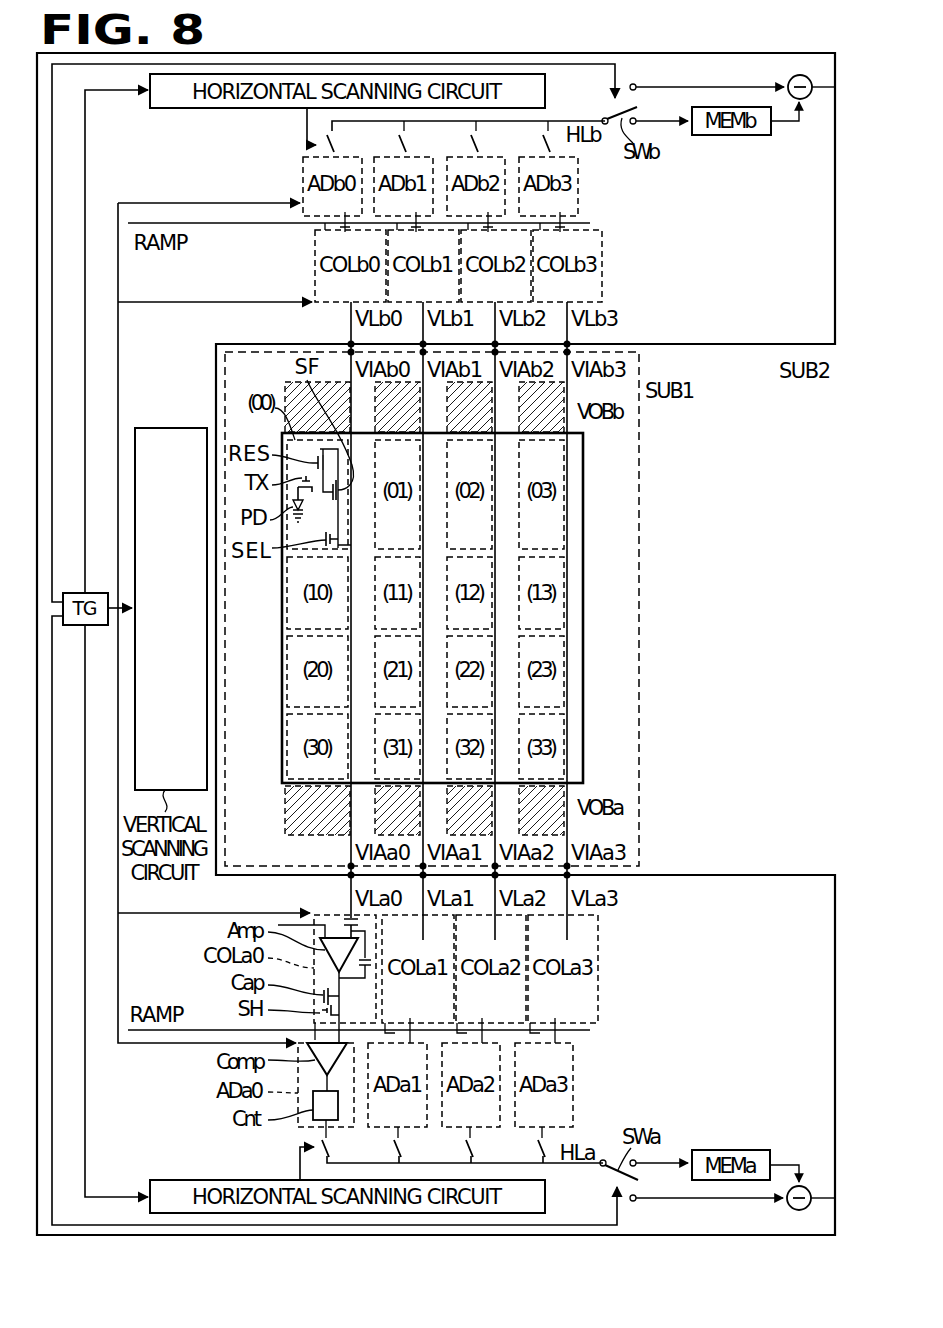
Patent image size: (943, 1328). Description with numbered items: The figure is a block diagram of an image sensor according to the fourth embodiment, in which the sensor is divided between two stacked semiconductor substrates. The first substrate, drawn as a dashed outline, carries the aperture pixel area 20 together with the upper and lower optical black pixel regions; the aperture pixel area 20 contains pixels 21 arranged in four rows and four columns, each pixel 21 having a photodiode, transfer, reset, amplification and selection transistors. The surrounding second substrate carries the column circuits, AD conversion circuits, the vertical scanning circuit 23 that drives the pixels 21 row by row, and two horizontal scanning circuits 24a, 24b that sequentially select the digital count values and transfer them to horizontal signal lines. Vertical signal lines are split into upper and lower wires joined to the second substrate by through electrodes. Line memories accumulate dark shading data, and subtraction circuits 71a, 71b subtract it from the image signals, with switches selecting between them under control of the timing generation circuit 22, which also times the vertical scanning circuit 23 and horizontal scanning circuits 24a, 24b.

The aperture pixel area 20 is at (459, 609).
The pixel 21 is at (548, 553).
The timing generation circuit 22 is at (72, 625).
The vertical scanning circuit 23 is at (171, 609).
The horizontal scanning circuit 24a is at (547, 1198).
The horizontal scanning circuit 24b is at (547, 90).
The subtraction circuit 71a is at (790, 1208).
The subtraction circuit 71b is at (790, 78).